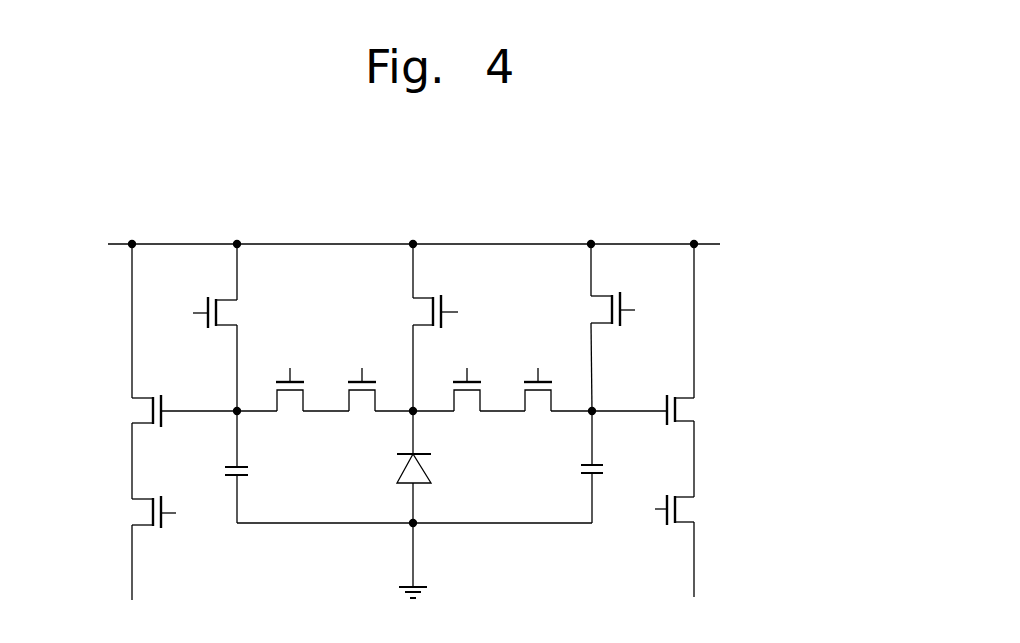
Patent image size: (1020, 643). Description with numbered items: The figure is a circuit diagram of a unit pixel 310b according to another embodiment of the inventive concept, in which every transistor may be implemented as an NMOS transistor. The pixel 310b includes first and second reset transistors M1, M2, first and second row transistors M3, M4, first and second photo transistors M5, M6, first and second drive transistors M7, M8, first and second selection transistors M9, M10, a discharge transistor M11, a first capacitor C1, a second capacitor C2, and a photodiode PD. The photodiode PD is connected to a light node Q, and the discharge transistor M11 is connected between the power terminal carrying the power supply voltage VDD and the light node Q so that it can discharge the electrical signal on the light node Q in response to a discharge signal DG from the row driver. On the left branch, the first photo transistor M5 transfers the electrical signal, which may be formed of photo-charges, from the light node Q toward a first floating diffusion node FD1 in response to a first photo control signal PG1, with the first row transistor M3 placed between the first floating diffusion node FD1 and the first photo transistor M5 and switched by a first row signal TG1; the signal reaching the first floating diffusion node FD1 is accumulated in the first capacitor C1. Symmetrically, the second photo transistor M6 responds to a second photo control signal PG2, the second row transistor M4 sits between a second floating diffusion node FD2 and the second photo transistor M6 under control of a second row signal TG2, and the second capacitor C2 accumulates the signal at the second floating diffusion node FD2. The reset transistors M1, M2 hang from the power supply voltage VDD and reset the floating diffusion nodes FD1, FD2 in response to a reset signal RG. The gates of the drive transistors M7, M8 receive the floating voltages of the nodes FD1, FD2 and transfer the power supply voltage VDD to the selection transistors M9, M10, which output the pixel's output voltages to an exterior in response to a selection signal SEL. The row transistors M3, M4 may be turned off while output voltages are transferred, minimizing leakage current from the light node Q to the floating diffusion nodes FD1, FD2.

The pixel 310b is at (678, 163).
The power supply voltage VDD is at (414, 234).
The first reset transistor M1 is at (235, 327).
The second reset transistor M2 is at (592, 327).
The first row transistor M3 is at (290, 408).
The second row transistor M4 is at (538, 408).
The first photo transistor M5 is at (362, 408).
The second photo transistor M6 is at (467, 408).
The first drive transistor M7 is at (172, 411).
The second drive transistor M8 is at (657, 410).
The first selection transistor M9 is at (134, 512).
The second selection transistor M10 is at (699, 510).
The discharge transistor M11 is at (408, 327).
The first capacitor C1 is at (250, 467).
The second capacitor C2 is at (579, 467).
The photodiode PD is at (399, 467).
The first floating diffusion node FD1 is at (219, 401).
The second floating diffusion node FD2 is at (610, 401).
The light node Q is at (420, 401).
The first row signal TG1 is at (289, 364).
The second row signal TG2 is at (537, 364).
The first photo control signal PG1 is at (362, 364).
The second photo control signal PG2 is at (467, 364).
The reset signal RG is at (413, 312).
The discharge signal DG is at (463, 313).
The selection signal SEL is at (414, 511).